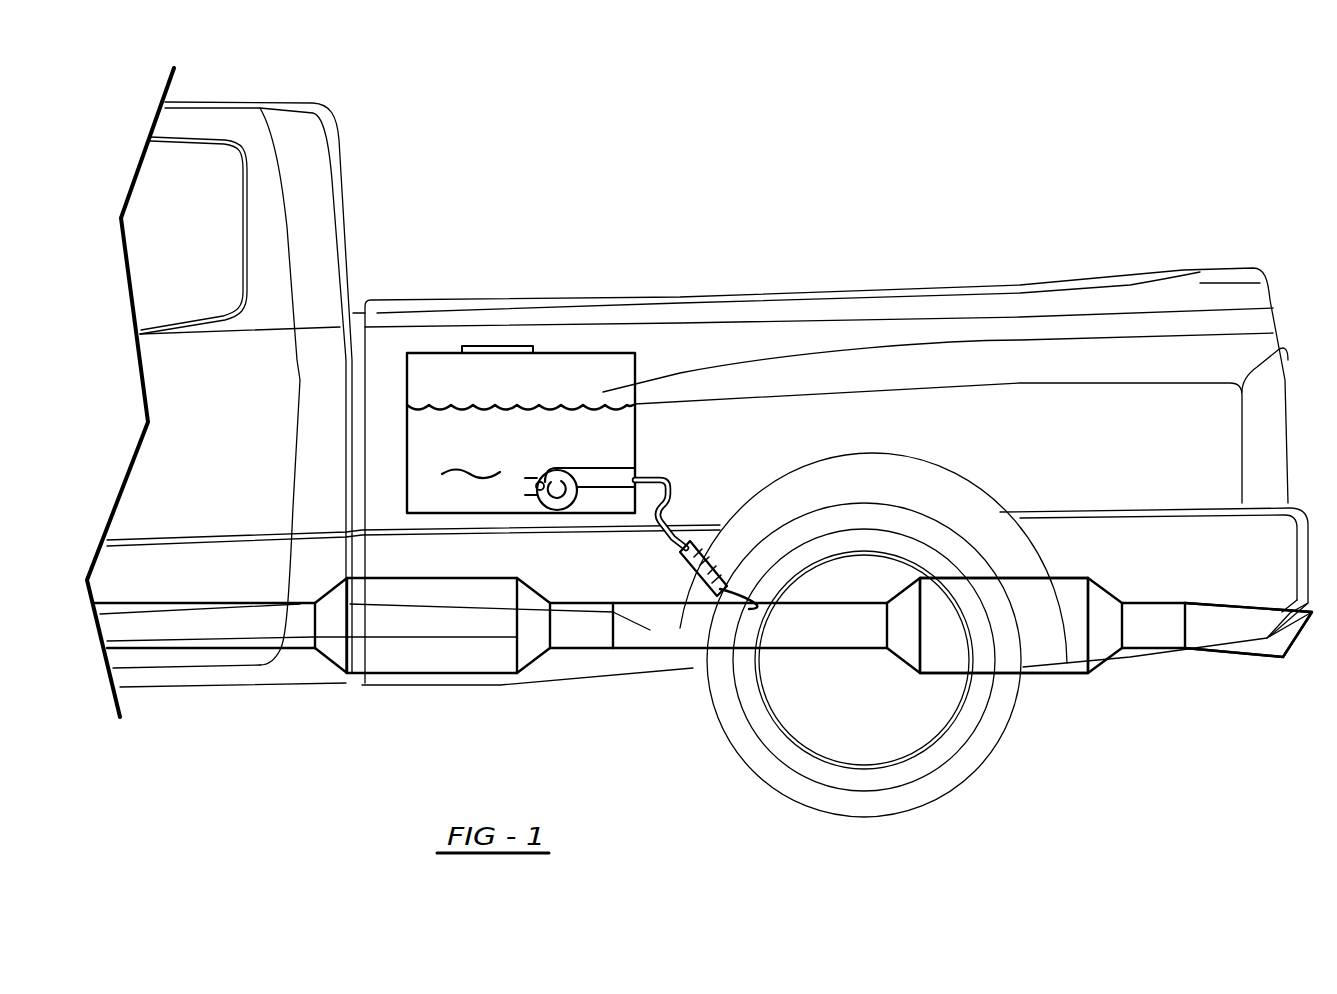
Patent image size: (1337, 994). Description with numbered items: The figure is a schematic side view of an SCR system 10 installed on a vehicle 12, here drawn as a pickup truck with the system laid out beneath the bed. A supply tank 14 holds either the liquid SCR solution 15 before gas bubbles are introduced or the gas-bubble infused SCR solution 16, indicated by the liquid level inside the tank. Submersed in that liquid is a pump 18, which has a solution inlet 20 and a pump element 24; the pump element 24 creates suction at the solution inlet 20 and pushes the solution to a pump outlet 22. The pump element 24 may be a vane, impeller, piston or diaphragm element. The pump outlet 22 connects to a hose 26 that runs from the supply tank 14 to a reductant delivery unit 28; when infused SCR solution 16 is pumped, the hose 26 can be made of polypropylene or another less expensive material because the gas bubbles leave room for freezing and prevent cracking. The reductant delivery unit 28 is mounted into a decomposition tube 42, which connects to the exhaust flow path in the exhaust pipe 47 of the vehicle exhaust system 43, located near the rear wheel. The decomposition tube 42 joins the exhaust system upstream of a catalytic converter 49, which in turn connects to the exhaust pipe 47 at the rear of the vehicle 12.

The SCR system 10 is at (1110, 207).
The vehicle 12 is at (734, 300).
The supply tank 14 is at (566, 356).
The SCR solution 15 is at (520, 441).
The infused SCR solution 16 is at (471, 474).
The pump 18 is at (622, 393).
The solution inlet 20 is at (524, 487).
The pump outlet 22 is at (623, 474).
The pump element 24 is at (565, 484).
The hose 26 is at (669, 480).
The reductant delivery unit 28 is at (707, 542).
The decomposition tube 42 is at (730, 596).
The vehicle exhaust system 43 is at (1060, 546).
The exhaust pipe 47 is at (1290, 648).
The catalytic converter 49 is at (1083, 673).